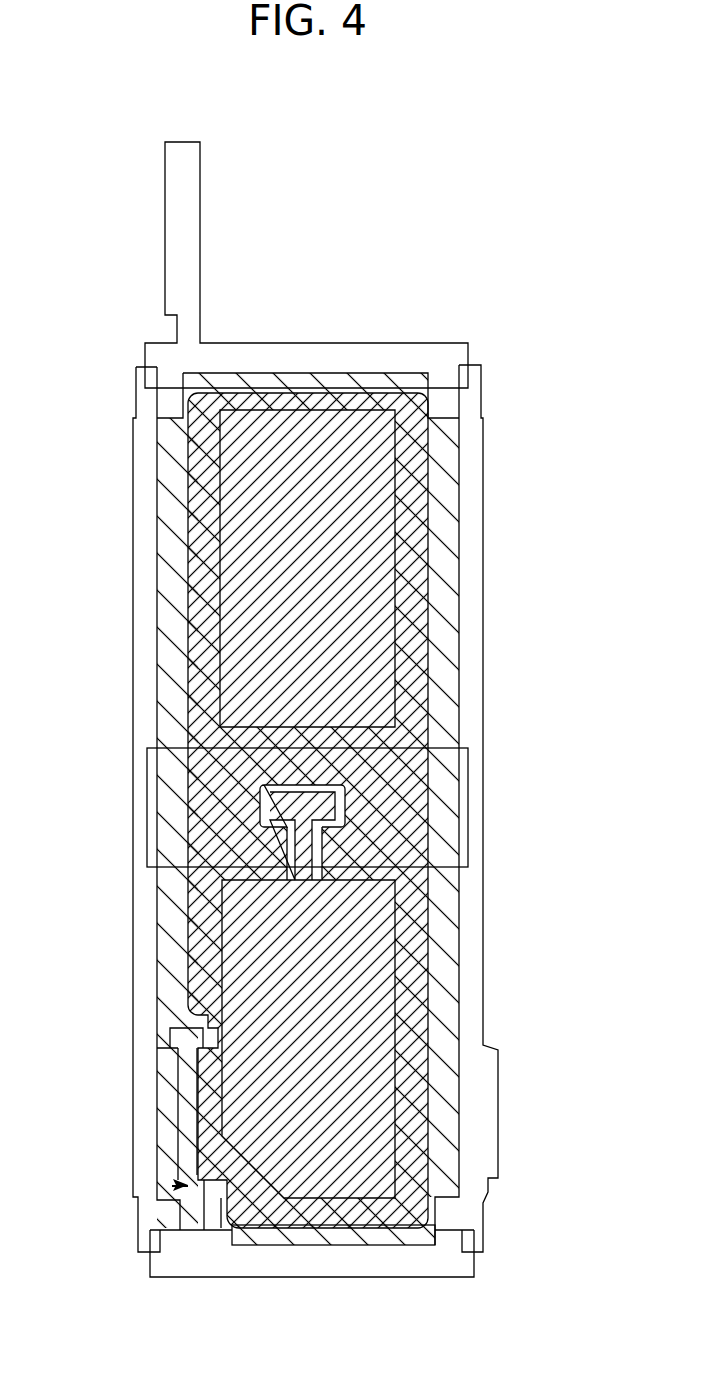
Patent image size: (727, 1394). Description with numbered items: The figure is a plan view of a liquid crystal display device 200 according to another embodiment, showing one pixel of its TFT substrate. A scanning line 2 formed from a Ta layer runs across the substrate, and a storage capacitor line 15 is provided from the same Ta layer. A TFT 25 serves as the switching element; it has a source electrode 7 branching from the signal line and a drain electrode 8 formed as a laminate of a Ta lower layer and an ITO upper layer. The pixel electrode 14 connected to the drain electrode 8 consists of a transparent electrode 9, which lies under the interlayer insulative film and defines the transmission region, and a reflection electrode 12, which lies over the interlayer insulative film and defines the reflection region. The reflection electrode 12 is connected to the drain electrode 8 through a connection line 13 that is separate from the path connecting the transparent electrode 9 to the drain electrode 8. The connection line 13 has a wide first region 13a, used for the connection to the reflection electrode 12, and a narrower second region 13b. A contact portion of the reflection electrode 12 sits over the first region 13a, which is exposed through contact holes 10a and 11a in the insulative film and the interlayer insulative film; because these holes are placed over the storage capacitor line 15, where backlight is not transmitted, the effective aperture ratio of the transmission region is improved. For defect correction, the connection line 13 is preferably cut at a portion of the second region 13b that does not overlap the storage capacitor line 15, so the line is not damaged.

The scanning line 2 is at (414, 350).
The source electrode 7 is at (165, 1063).
The drain electrode 8 is at (209, 1182).
The transparent electrode 9 is at (385, 522).
The contact hole 10a is at (442, 831).
The contact hole 11a is at (327, 800).
The reflection electrode 12 is at (447, 445).
The connection line 13 is at (444, 837).
The first region 13a is at (328, 813).
The second region 13b is at (302, 848).
The pixel electrode 14 is at (377, 809).
The storage capacitor line 15 is at (463, 755).
The TFT 25 is at (172, 1186).
The liquid crystal display device 200 is at (496, 279).